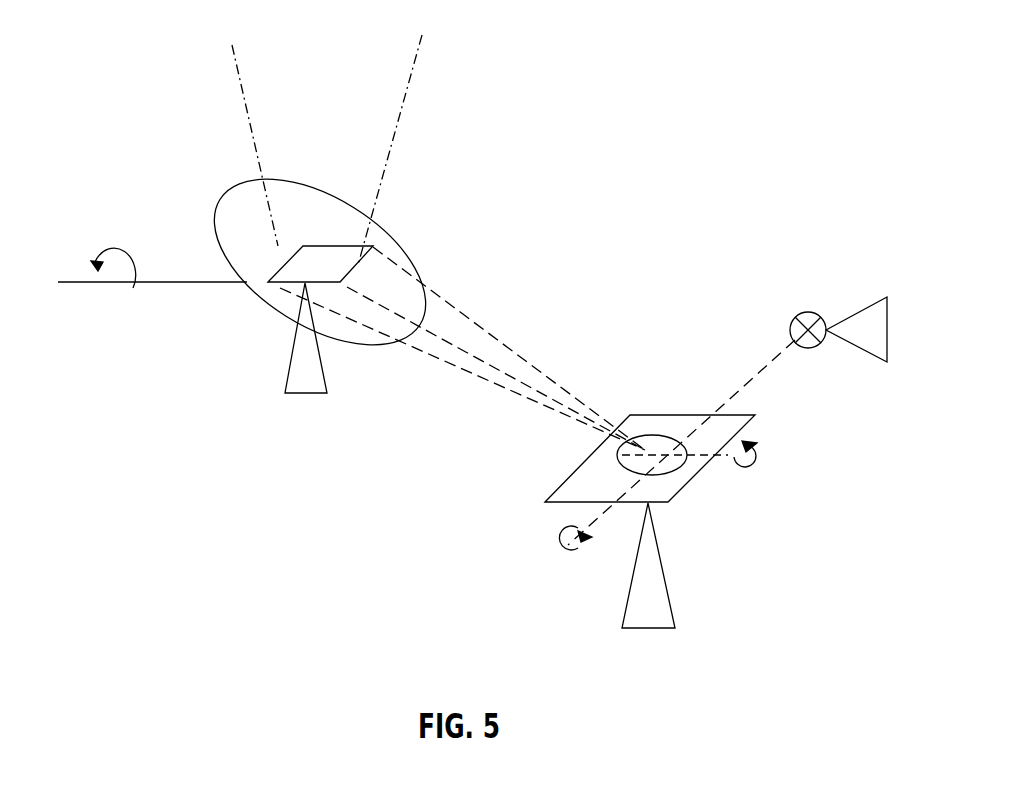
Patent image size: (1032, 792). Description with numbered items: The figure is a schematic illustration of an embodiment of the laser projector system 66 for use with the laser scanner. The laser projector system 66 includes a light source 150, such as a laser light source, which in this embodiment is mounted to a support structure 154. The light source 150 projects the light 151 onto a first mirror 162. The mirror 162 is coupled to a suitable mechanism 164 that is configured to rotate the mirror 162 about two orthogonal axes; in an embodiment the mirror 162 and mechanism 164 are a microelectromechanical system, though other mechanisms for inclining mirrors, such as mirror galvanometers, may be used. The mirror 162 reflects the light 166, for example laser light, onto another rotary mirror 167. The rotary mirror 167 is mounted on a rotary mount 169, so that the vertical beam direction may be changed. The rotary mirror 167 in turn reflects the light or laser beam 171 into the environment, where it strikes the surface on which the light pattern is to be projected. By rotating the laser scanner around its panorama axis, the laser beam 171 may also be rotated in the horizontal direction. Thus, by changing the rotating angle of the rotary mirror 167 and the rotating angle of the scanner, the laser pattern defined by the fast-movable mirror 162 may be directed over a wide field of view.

The laser projector system 66 is at (614, 153).
The light source 150 is at (810, 310).
The light 151 is at (742, 383).
The support structure 154 is at (887, 295).
The first mirror 162 is at (697, 478).
The mechanism 164 is at (667, 575).
The light 166 is at (463, 372).
The rotary mirror 167 is at (288, 285).
The rotary mount 169 is at (283, 395).
The laser beam 171 is at (392, 145).